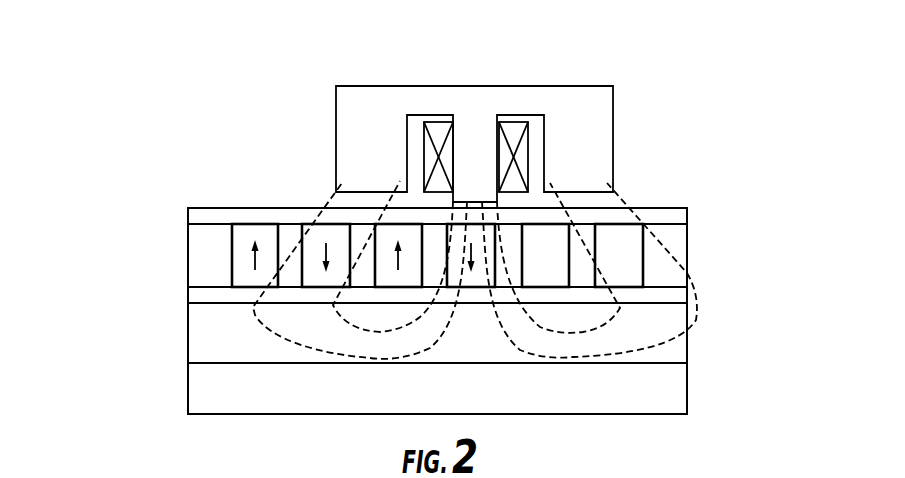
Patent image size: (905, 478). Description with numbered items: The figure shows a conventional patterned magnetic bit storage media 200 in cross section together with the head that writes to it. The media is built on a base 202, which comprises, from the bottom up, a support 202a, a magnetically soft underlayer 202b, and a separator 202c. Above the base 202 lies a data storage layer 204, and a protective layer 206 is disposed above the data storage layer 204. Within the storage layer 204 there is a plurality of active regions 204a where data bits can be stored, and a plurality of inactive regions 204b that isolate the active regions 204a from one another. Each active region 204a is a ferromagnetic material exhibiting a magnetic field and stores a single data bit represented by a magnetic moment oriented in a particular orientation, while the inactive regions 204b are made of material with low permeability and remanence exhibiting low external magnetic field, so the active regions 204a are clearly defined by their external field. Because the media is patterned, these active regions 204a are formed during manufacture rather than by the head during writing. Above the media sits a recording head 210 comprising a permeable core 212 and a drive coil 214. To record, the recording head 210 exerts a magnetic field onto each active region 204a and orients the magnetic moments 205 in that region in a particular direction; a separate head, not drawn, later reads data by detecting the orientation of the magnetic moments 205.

The patterned magnetic bit storage media 200 is at (200, 178).
The base 202 is at (130, 290).
The support 202a is at (687, 389).
The magnetically soft underlayer 202b is at (687, 334).
The separator 202c is at (188, 295).
The data storage layer 204 is at (687, 266).
The active regions 204a is at (245, 277).
The inactive regions 204b is at (585, 277).
The magnetic moments 205 is at (257, 260).
The protective layer 206 is at (687, 216).
The recording head 210 is at (634, 66).
The permeable core 212 is at (613, 132).
The drive coil 214 is at (443, 120).